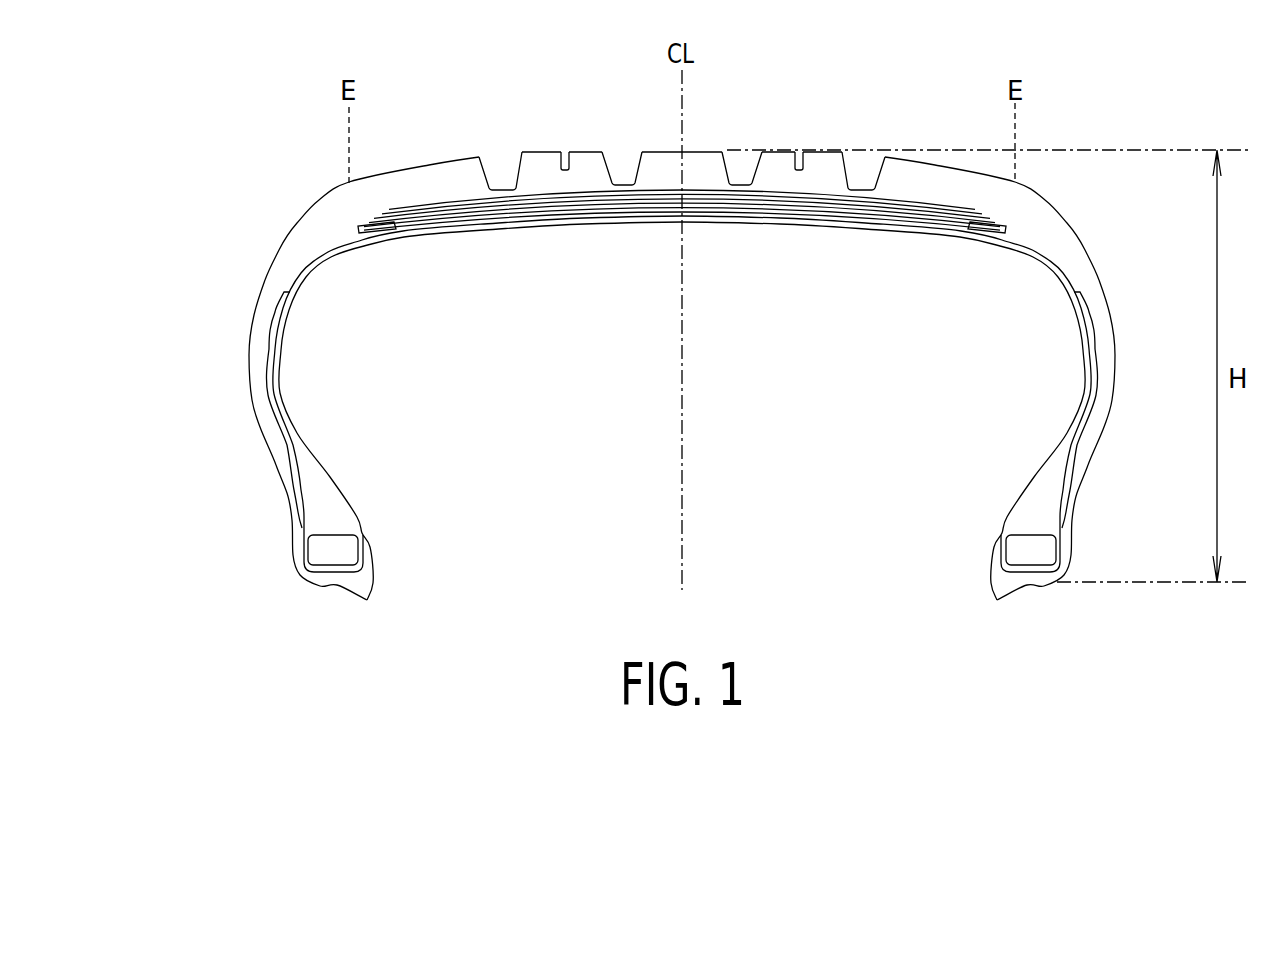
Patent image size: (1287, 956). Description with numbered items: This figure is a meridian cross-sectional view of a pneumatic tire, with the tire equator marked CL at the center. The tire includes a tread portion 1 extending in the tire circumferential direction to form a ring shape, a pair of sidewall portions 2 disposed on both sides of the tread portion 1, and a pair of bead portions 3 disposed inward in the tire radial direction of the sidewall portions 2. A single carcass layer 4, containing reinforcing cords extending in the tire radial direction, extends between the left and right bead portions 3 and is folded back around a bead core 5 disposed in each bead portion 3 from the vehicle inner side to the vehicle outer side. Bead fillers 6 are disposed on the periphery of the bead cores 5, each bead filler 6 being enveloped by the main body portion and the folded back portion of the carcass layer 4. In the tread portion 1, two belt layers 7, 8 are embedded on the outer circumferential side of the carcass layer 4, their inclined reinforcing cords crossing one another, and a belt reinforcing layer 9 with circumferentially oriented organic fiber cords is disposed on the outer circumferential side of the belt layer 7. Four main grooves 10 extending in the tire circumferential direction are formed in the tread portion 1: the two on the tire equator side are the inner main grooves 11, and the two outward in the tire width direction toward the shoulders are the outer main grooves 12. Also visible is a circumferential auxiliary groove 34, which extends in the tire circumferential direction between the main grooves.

The tread portion 1 is at (932, 160).
The sidewall portion 2 is at (227, 320).
The bead portion 3 is at (268, 565).
The carcass layer 4 is at (1043, 265).
The bead core 5 is at (340, 555).
The bead filler 6 is at (327, 517).
The belt layer 7 is at (758, 203).
The belt layer 8 is at (813, 203).
The belt reinforcing layer 9 is at (910, 202).
The main groove 10 is at (684, 139).
The inner main groove 11 is at (682, 168).
The outer main groove 12 is at (497, 183).
The circumferential auxiliary groove 34 is at (563, 160).